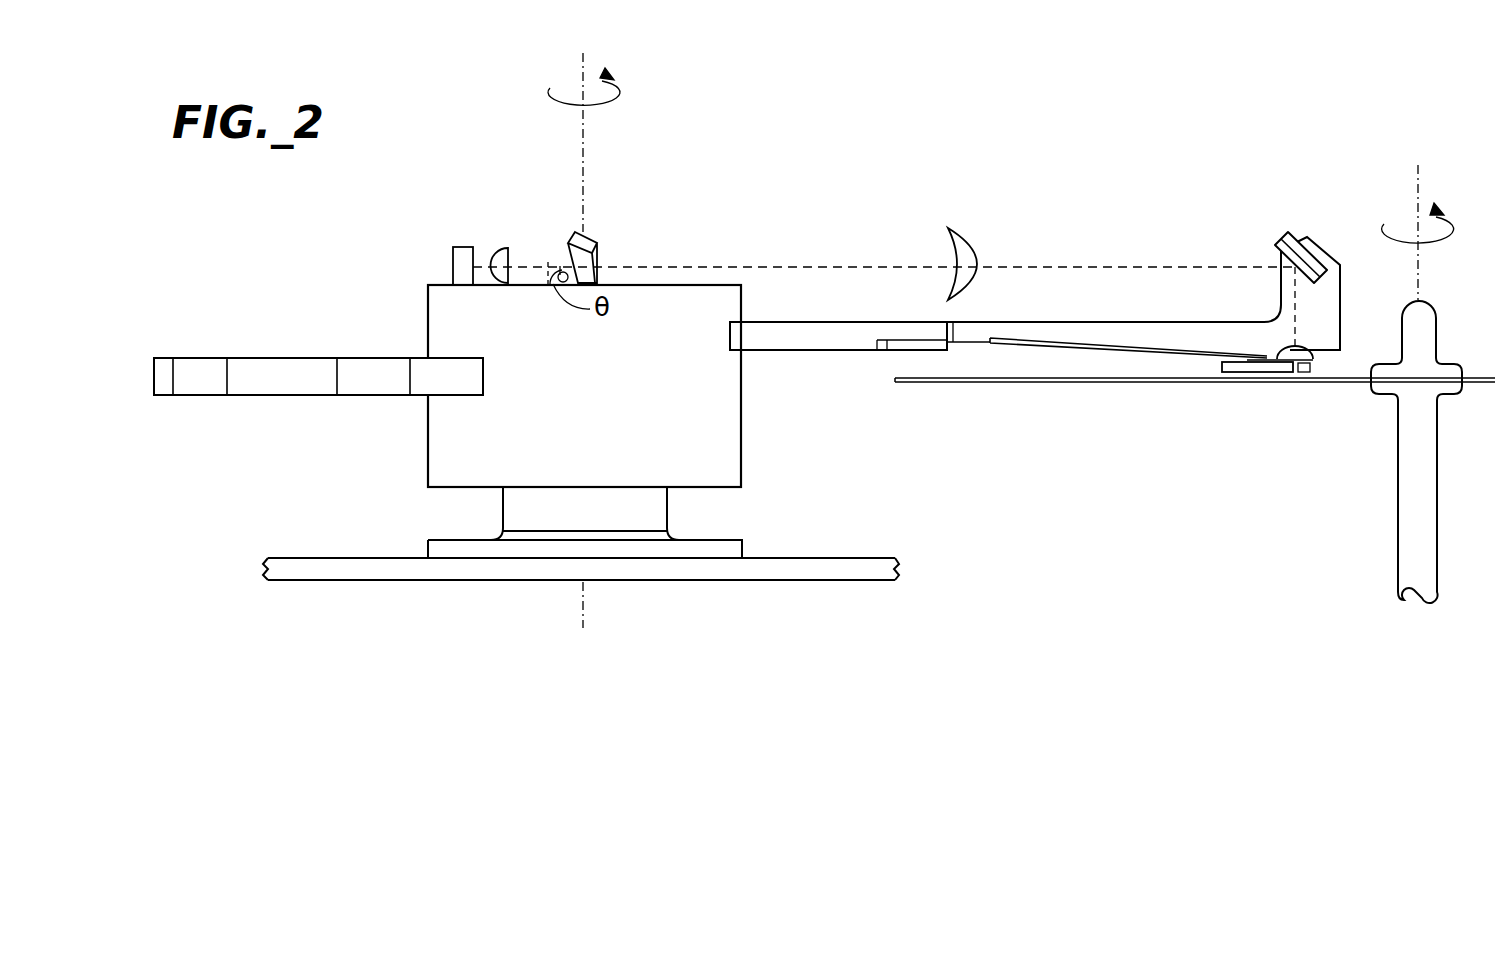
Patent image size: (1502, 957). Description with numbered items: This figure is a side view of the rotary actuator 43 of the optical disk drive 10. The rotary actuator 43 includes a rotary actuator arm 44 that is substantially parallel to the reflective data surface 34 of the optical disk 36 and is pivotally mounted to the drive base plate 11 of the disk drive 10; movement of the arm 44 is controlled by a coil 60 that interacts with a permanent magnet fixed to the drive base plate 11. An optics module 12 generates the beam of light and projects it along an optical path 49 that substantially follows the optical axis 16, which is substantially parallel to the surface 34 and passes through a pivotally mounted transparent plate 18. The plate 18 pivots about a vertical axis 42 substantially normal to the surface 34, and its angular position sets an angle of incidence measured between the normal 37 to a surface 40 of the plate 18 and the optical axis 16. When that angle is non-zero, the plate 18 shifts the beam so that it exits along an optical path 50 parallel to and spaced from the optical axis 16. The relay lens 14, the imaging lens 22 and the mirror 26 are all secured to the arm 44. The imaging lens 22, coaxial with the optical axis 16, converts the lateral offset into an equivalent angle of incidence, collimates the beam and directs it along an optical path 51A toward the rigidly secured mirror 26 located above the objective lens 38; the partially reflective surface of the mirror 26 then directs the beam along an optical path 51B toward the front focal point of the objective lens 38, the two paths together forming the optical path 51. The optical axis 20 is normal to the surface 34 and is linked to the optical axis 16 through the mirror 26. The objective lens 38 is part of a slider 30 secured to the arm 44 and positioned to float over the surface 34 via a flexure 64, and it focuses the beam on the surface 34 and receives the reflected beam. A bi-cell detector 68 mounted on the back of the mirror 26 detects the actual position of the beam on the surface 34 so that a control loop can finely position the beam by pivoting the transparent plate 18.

The optical disk drive 10 is at (645, 605).
The drive base plate 11 is at (346, 557).
The optics module 12 is at (452, 270).
The relay lens 14 is at (500, 248).
The optical axis 16 is at (535, 290).
The transparent plate 18 is at (597, 240).
The optical axis 20 is at (1296, 307).
The imaging lens 22 is at (955, 232).
The mirror 26 is at (1277, 243).
The slider 30 is at (1222, 367).
The reflective data surface 34 is at (945, 378).
The optical disk 36 is at (895, 379).
The normal 37 is at (545, 290).
The objective lens 38 is at (1316, 355).
The surface 40 is at (566, 265).
The vertical axis 42 is at (580, 137).
The rotary actuator 43 is at (1003, 112).
The rotary actuator arm 44 is at (760, 350).
The optical path 49 is at (548, 262).
The optical path 50 is at (835, 268).
The optical path 51 is at (1063, 268).
The optical path 51A is at (1160, 267).
The optical path 51B is at (1293, 323).
The coil 60 is at (283, 398).
The flexure 64 is at (1122, 352).
The bi-cell detector 68 is at (1283, 232).